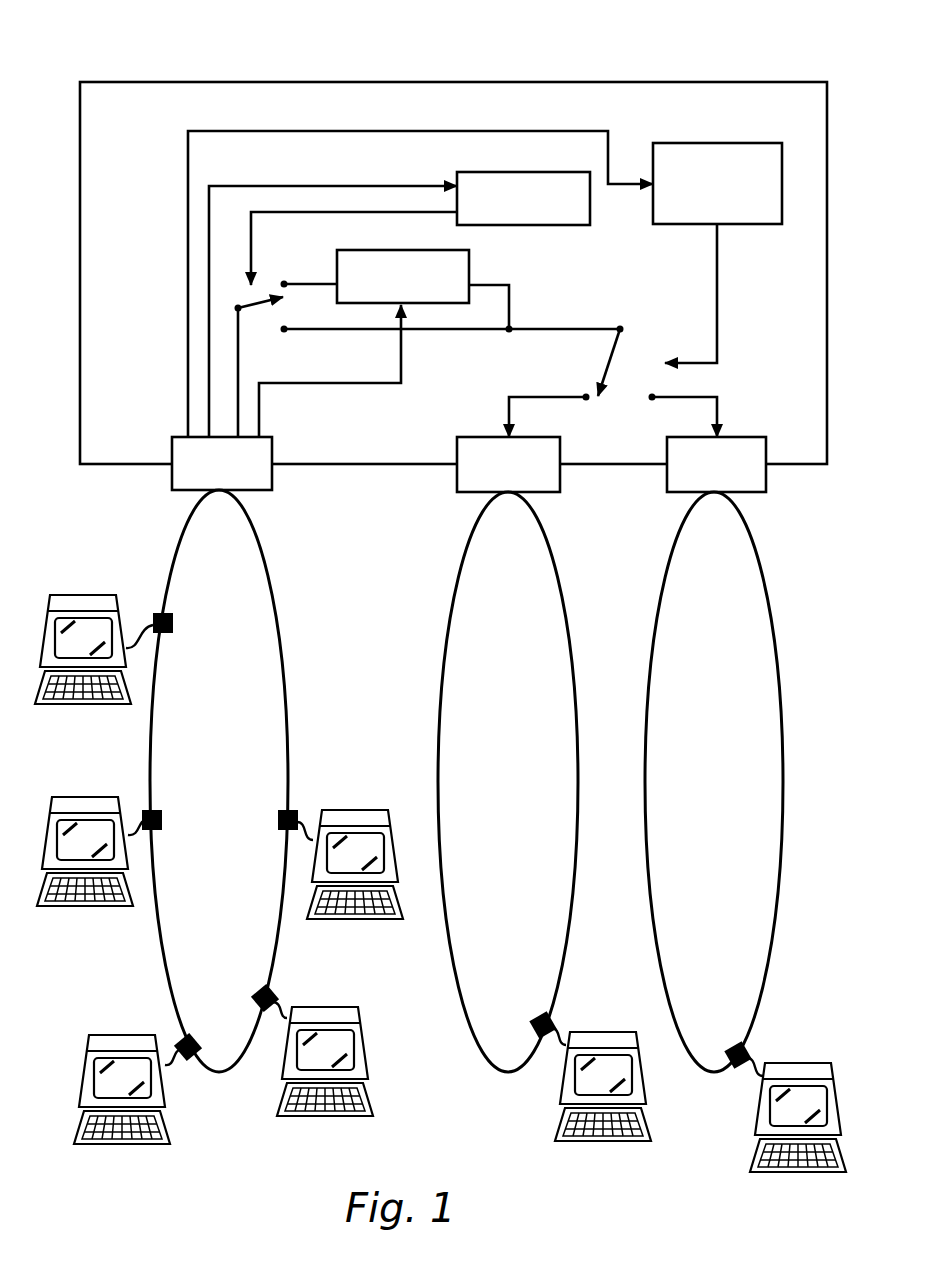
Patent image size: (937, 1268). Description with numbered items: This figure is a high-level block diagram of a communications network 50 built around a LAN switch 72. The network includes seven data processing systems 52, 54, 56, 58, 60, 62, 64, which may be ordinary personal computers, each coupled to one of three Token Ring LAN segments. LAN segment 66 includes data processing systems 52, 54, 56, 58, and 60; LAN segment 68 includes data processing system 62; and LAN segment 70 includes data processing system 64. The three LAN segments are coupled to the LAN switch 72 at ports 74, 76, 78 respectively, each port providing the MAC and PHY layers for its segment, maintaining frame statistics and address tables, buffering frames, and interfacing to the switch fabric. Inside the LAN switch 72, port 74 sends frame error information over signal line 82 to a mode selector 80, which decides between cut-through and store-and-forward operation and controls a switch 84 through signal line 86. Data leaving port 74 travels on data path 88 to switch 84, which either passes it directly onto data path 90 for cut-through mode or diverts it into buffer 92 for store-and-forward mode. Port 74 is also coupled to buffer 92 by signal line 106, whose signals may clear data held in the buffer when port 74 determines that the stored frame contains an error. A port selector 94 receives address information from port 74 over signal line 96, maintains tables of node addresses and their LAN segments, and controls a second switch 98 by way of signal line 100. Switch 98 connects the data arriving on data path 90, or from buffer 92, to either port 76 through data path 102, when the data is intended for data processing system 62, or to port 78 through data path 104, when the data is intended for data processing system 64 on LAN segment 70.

The communications network 50 is at (86, 50).
The data processing system 52 is at (62, 595).
The data processing system 54 is at (58, 797).
The data processing system 56 is at (120, 1035).
The data processing system 58 is at (333, 1007).
The data processing system 60 is at (357, 810).
The data processing system 62 is at (611, 1032).
The data processing system 64 is at (806, 1063).
The LAN segment 66 is at (275, 577).
The LAN segment 68 is at (563, 578).
The LAN segment 70 is at (770, 578).
The LAN switch 72 is at (80, 203).
The port 74 is at (272, 458).
The port 76 is at (560, 456).
The port 78 is at (754, 437).
The mode selector 80 is at (550, 172).
The signal line 82 is at (340, 172).
The switch 84 is at (240, 294).
The signal line 86 is at (301, 200).
The data path 88 is at (238, 380).
The data path 90 is at (346, 318).
The buffer 92 is at (469, 284).
The port selector 94 is at (752, 143).
The signal line 96 is at (415, 118).
The switch 98 is at (628, 338).
The signal line 100 is at (717, 298).
The data path 102 is at (520, 397).
The data path 104 is at (690, 397).
The signal line 106 is at (322, 383).